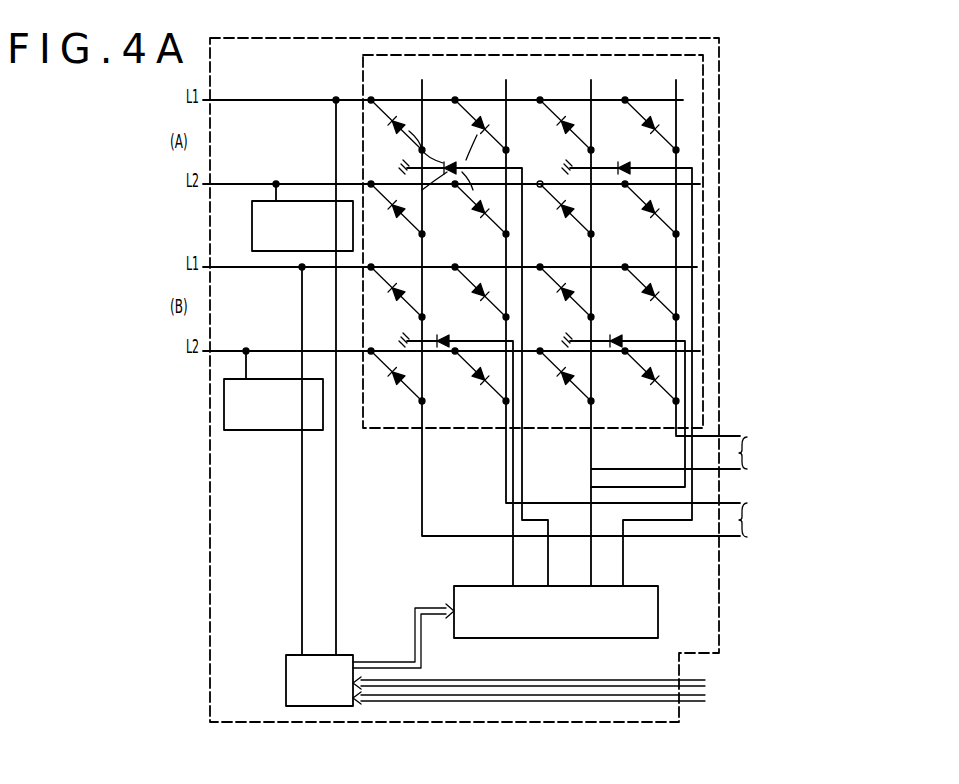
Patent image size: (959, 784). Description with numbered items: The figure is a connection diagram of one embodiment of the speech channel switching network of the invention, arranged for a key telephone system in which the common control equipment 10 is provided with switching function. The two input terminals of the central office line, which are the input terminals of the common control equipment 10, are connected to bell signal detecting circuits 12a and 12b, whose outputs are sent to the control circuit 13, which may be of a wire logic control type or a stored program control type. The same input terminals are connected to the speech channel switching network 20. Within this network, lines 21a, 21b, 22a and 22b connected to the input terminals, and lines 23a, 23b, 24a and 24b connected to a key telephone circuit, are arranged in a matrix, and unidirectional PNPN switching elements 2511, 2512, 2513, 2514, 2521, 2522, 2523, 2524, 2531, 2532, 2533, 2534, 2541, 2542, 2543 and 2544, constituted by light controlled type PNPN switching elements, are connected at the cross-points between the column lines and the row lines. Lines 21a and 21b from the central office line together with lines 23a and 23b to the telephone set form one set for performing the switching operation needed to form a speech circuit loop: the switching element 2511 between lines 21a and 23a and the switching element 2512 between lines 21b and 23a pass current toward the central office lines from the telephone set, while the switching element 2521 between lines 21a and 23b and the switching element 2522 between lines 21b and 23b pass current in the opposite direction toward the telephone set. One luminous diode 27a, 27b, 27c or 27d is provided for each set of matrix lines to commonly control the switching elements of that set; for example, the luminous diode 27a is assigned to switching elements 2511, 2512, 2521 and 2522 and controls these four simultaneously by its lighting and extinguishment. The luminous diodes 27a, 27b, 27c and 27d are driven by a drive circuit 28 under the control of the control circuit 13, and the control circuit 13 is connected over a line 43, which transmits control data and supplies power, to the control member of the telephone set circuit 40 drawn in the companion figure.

The common control equipment 10 is at (719, 83).
The speech channel switching network 20 is at (703, 233).
The bell signal detecting circuit 12a is at (252, 219).
The bell signal detecting circuit 12b is at (226, 430).
The control circuit 13 is at (286, 688).
The line 21a is at (443, 89).
The line 21b is at (451, 172).
The line 22a is at (450, 255).
The line 22b is at (451, 339).
The line 23a is at (577, 297).
The line 23b is at (619, 281).
The line 24a is at (661, 322).
The line 24b is at (704, 247).
The switching element 2511 is at (396, 126).
The switching element 2512 is at (396, 211).
The switching element 2513 is at (396, 293).
The switching element 2514 is at (396, 377).
The switching element 2521 is at (474, 125).
The switching element 2522 is at (474, 209).
The switching element 2523 is at (480, 293).
The switching element 2524 is at (480, 377).
The switching element 2531 is at (565, 126).
The switching element 2532 is at (565, 211).
The switching element 2533 is at (565, 293).
The switching element 2534 is at (565, 377).
The switching element 2541 is at (643, 125).
The switching element 2542 is at (643, 209).
The switching element 2543 is at (650, 293).
The switching element 2544 is at (650, 377).
The luminous diode 27a is at (473, 358).
The luminous diode 27b is at (627, 362).
The luminous diode 27c is at (456, 449).
The luminous diode 27d is at (623, 400).
The drive circuit 28 is at (658, 590).
The telephone set circuit 40 is at (826, 571).
The line 43 is at (514, 680).